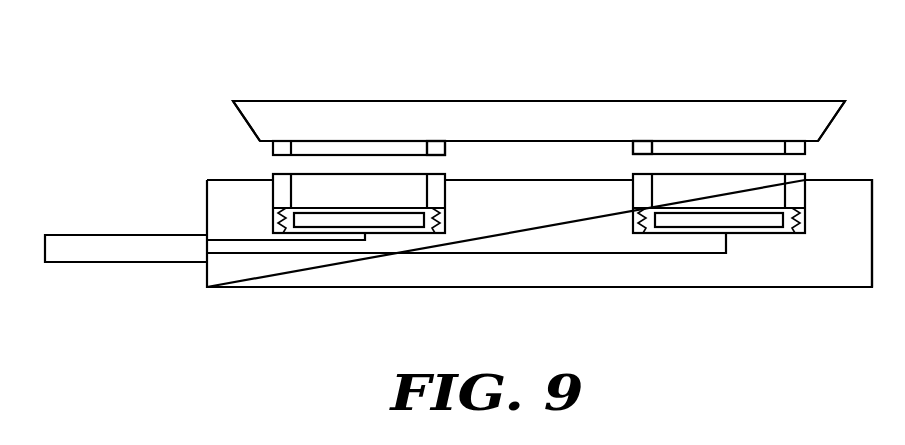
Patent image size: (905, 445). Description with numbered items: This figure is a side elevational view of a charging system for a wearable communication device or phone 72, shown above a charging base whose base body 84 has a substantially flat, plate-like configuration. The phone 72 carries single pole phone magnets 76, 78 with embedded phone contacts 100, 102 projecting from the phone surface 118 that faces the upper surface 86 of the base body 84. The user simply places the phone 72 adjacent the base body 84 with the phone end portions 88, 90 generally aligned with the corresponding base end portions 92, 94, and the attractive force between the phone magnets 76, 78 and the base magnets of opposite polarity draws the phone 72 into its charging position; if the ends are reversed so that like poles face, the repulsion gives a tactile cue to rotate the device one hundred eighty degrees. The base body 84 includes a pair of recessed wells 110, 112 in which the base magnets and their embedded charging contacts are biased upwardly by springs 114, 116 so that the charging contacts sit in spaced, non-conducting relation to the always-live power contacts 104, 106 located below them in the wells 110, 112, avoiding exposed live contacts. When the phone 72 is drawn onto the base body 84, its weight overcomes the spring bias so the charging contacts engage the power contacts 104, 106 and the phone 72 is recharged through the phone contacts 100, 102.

The wearable communication device or phone 72 is at (660, 67).
The phone magnet 76 is at (438, 155).
The phone magnet 78 is at (646, 155).
The base body 84 is at (580, 277).
The upper surface of base body 86 is at (557, 177).
The end portion of phone 88 is at (266, 112).
The end portion of phone 90 is at (815, 113).
The end portion of base body 92 is at (220, 275).
The end portion of base body 94 is at (850, 275).
The phone contact 100 is at (380, 145).
The phone contact 102 is at (713, 155).
The power contact 104 is at (413, 233).
The power contact 106 is at (780, 228).
The recessed well 110 is at (392, 233).
The recessed well 112 is at (748, 233).
The spring 114 is at (443, 225).
The spring 116 is at (802, 218).
The phone surface 118 is at (550, 142).